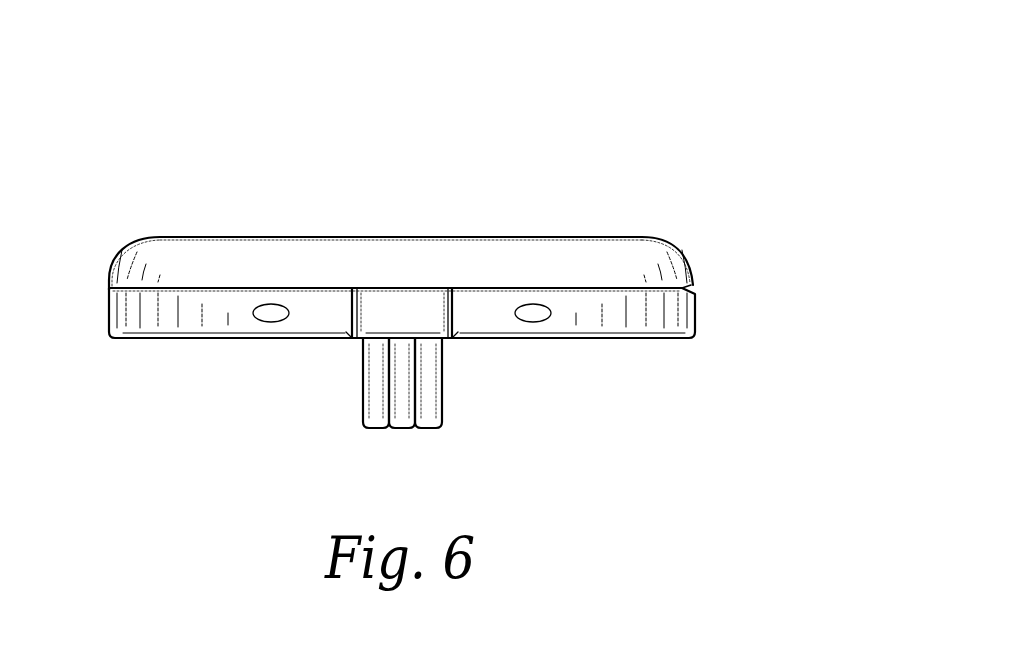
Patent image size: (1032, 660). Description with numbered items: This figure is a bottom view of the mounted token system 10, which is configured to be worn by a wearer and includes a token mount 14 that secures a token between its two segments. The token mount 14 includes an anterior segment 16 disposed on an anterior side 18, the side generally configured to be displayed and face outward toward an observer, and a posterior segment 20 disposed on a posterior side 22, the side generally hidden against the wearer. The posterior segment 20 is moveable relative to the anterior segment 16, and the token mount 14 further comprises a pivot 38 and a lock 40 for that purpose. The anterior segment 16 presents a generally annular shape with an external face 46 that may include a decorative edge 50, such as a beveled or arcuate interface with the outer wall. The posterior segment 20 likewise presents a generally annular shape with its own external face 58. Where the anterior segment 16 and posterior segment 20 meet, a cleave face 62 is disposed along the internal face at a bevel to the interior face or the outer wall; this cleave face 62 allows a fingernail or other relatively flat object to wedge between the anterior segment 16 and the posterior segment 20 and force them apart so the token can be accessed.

The mounted token system 10 is at (674, 105).
The token mount 14 is at (762, 243).
The anterior segment 16 is at (305, 248).
The anterior side 18 is at (226, 221).
The posterior segment 20 is at (300, 322).
The posterior side 22 is at (217, 410).
The pivot 38 is at (403, 302).
The lock 40 is at (470, 413).
The external face 46 is at (536, 236).
The decorative edge 50 is at (115, 234).
The external face 58 is at (588, 341).
The cleave face 62 is at (690, 286).